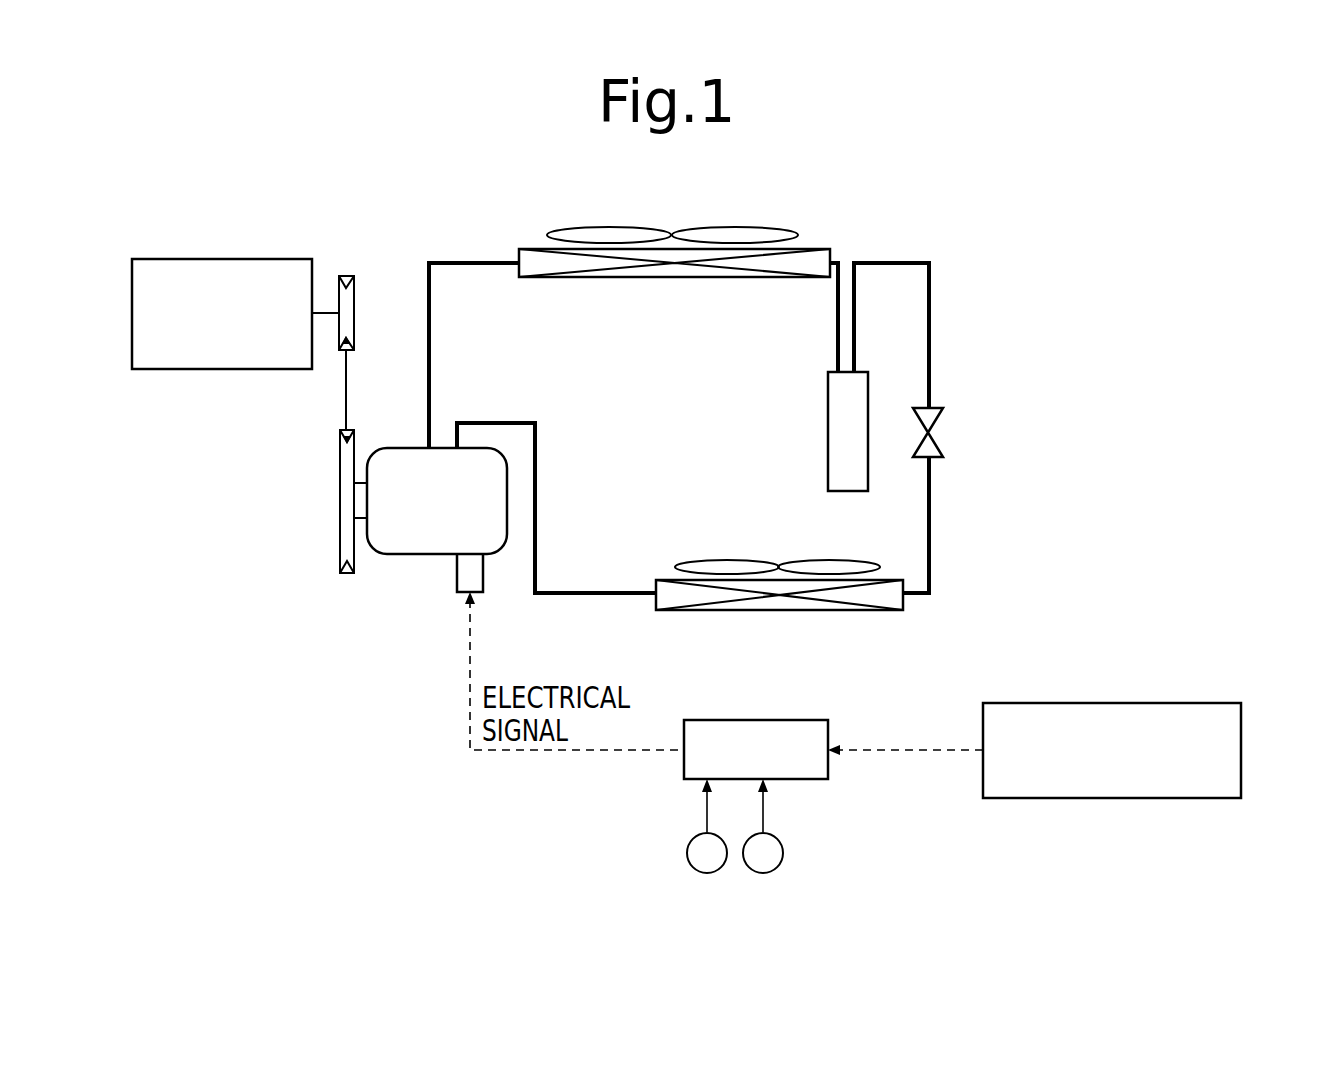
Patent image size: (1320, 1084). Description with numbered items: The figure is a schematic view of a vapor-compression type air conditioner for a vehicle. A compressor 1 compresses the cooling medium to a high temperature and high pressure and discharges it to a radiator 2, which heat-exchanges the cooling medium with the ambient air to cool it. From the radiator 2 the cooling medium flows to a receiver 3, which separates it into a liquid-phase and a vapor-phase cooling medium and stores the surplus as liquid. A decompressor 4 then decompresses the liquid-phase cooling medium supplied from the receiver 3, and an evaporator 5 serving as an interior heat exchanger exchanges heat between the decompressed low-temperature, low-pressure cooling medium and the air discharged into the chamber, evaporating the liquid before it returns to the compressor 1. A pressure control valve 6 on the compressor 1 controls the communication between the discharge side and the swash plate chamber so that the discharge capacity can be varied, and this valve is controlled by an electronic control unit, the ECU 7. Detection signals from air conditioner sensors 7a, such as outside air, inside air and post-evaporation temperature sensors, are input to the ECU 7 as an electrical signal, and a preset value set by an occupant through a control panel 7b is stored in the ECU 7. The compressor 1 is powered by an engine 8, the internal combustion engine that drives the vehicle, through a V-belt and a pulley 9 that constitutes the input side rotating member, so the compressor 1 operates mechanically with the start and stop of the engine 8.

The compressor 1 is at (401, 560).
The radiator 2 is at (805, 249).
The receiver 3 is at (828, 432).
The decompressor 4 is at (948, 442).
The evaporator 5 is at (867, 610).
The pressure control valve 6 is at (463, 578).
The electronic control unit (ECU) 7 is at (755, 720).
The air conditioner sensors 7a is at (783, 878).
The control panel 7b is at (1123, 798).
The engine 8 is at (255, 259).
The pulley 9 is at (341, 507).